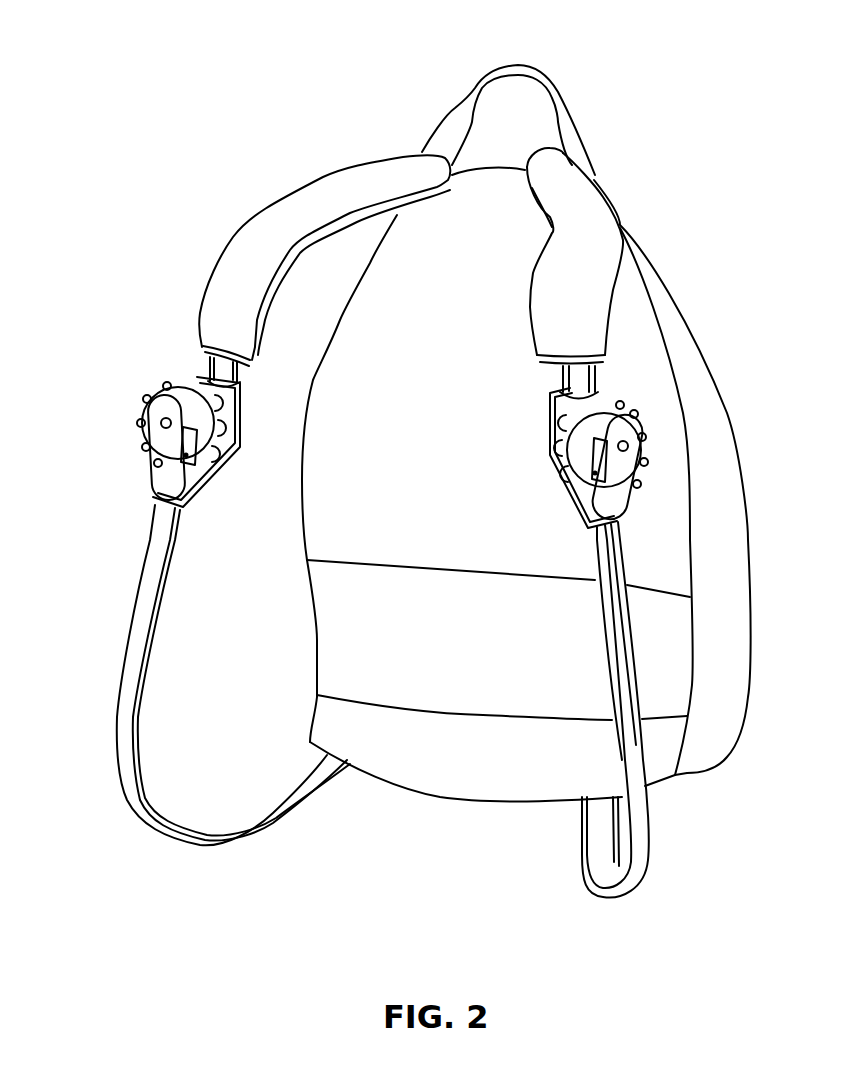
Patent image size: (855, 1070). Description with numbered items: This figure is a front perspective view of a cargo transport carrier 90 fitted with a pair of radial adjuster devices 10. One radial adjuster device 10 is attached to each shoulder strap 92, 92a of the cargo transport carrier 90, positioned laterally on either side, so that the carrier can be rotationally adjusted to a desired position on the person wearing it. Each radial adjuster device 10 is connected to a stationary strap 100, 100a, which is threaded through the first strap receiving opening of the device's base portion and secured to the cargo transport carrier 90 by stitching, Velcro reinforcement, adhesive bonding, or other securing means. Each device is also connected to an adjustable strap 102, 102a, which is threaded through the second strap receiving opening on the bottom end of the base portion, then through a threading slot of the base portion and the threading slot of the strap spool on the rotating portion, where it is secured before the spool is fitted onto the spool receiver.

The cargo transport carrier 90 is at (203, 56).
The shoulder strap 92 is at (233, 240).
The shoulder strap 92a is at (625, 290).
The stationary strap 100 is at (207, 373).
The stationary strap 100a is at (600, 385).
The radial adjuster device 10 is at (116, 416).
The adjustable strap 102 is at (203, 853).
The adjustable strap 102a is at (650, 853).